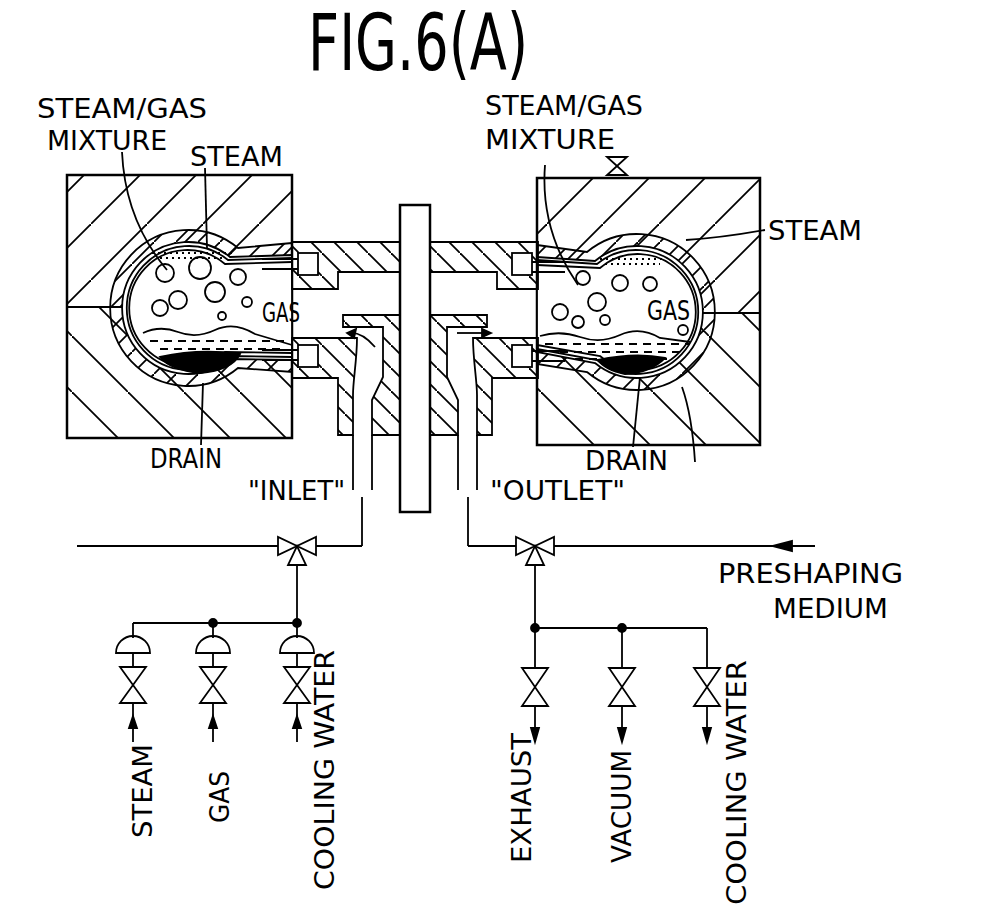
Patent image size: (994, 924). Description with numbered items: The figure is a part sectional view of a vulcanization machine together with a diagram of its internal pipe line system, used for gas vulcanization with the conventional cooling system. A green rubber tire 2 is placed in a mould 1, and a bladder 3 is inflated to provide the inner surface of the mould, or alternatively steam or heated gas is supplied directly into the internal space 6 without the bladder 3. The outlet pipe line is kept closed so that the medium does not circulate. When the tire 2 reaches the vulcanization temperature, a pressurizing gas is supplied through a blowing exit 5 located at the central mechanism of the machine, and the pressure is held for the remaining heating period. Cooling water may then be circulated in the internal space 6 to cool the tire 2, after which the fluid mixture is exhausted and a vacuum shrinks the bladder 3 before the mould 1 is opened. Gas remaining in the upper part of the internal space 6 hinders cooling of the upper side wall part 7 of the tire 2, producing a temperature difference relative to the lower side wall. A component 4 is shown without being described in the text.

The mould 1 is at (716, 194).
The green rubber tire 2 is at (698, 438).
The bladder 3 is at (712, 342).
The blow mandrel 4 is at (456, 212).
The blowing exit 5 is at (330, 322).
The internal space 6 is at (208, 316).
The upper side wall part 7 is at (638, 238).